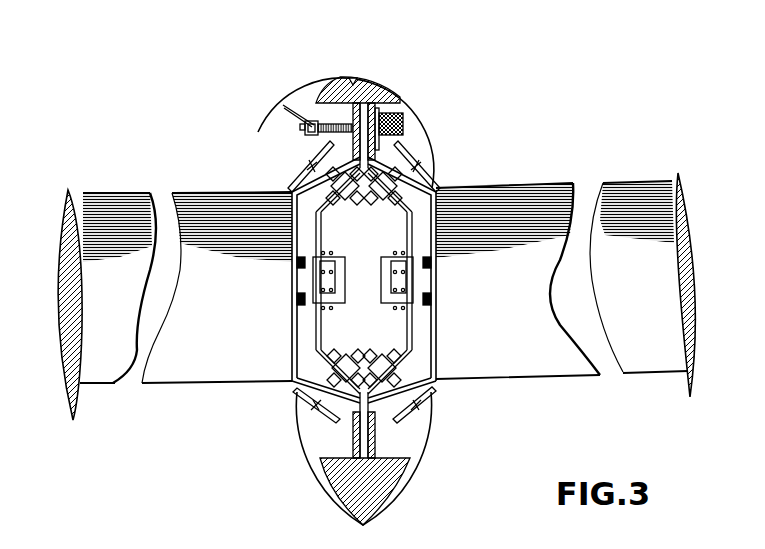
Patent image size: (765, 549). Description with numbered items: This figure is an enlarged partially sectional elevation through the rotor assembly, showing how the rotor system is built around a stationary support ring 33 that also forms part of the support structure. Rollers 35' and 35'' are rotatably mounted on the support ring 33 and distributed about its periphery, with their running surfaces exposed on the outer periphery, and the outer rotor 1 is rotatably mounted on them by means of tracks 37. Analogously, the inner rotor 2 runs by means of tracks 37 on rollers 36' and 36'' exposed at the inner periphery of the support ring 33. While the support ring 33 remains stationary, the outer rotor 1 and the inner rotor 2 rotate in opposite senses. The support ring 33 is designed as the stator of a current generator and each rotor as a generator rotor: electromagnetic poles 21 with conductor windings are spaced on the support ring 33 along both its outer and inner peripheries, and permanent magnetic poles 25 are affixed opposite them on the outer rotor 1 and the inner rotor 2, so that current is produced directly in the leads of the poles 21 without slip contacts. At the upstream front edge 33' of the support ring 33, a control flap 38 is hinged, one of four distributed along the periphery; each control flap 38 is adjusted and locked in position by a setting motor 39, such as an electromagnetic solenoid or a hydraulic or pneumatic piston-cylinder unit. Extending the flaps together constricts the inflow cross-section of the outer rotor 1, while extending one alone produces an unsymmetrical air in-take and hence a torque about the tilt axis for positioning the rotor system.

The outer rotor 1 is at (193, 352).
The inner rotor 2 is at (535, 345).
The electromagnetic poles 21 is at (392, 267).
The permanent magnetic poles 25 is at (300, 298).
The support ring 33 is at (383, 90).
The upstream front edge 33' is at (369, 42).
The roller 35' is at (253, 153).
The roller 36' is at (459, 145).
The roller 35'' is at (267, 425).
The roller 36'' is at (464, 425).
The tracks 37 is at (313, 168).
The control flap 38 is at (297, 100).
The setting motor 39 is at (402, 110).